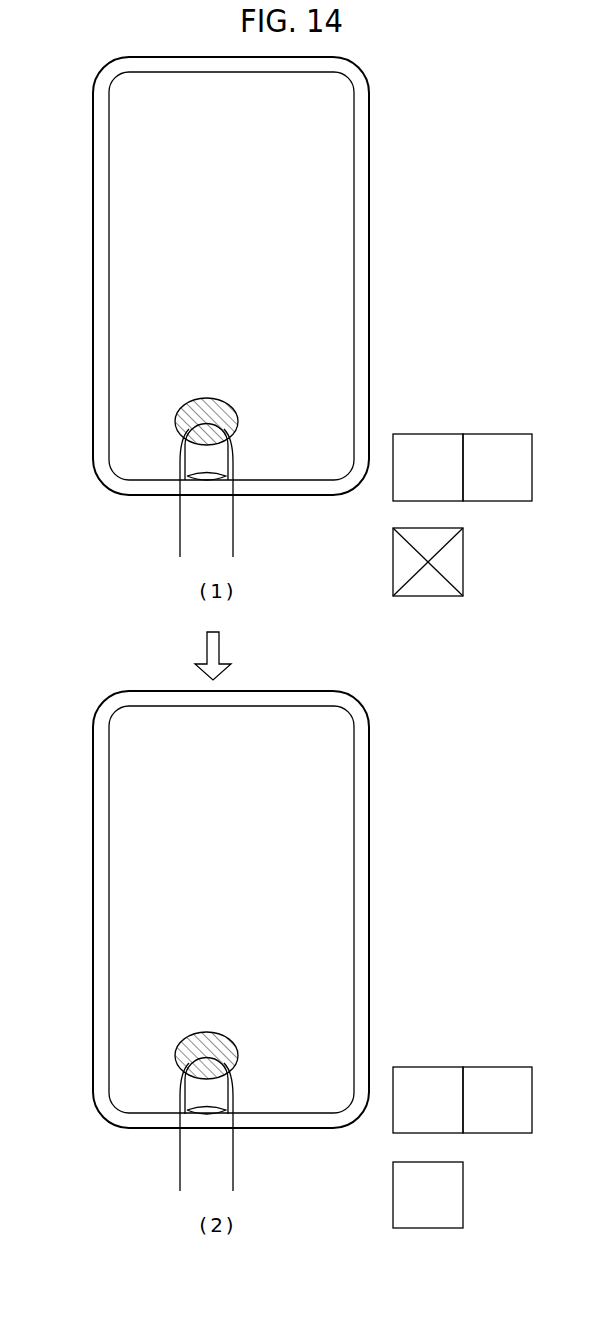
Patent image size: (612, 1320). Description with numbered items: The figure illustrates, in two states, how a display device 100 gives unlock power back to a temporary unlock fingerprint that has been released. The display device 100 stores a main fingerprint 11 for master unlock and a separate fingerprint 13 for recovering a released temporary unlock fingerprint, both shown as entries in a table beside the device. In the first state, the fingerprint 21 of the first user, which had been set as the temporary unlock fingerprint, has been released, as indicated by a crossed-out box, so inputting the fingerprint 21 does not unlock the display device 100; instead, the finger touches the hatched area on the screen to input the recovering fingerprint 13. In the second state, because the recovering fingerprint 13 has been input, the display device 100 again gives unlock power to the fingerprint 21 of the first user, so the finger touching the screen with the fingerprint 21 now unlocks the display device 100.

The display device 100 is at (370, 200).
The main fingerprint 11 is at (429, 433).
The fingerprint for recovering a released temporary unlock fingerprint 13 is at (176, 421).
The fingerprint of a first user 21 is at (465, 562).